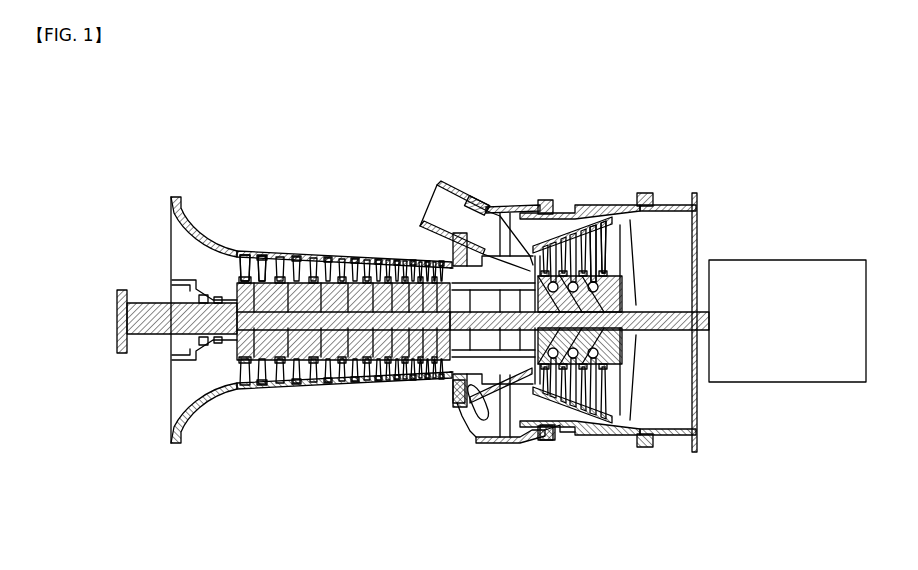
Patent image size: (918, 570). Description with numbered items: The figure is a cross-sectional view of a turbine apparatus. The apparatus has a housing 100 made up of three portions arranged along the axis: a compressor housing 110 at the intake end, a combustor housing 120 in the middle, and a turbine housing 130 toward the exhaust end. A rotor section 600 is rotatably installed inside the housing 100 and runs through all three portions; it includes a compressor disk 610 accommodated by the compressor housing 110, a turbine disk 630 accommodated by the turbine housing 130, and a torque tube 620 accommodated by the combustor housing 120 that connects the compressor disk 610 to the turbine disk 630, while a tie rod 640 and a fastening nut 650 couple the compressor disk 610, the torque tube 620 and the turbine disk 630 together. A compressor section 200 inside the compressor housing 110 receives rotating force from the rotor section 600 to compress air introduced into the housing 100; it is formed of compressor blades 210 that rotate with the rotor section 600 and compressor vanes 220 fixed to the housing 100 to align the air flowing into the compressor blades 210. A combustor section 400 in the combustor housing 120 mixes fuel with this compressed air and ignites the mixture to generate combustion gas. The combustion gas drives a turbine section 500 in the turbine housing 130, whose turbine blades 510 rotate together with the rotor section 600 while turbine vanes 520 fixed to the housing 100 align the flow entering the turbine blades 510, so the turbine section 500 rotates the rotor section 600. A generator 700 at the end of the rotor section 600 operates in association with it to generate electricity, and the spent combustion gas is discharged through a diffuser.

The housing 100 is at (445, 252).
The compressor housing 110 is at (341, 254).
The combustor housing 120 is at (476, 272).
The turbine housing 130 is at (592, 273).
The compressor section 200 is at (341, 279).
The compressor blade 210 is at (288, 255).
The compressor vane 220 is at (258, 253).
The combustor section 400 is at (437, 203).
The turbine section 500 is at (592, 282).
The turbine blade 510 is at (628, 232).
The turbine vane 520 is at (603, 232).
The rotor section 600 is at (434, 369).
The compressor disk 610 is at (349, 392).
The torque tube 620 is at (497, 385).
The turbine disk 630 is at (590, 408).
The tie rod 640 is at (405, 380).
The fastening nut 650 is at (656, 338).
The generator 700 is at (766, 385).